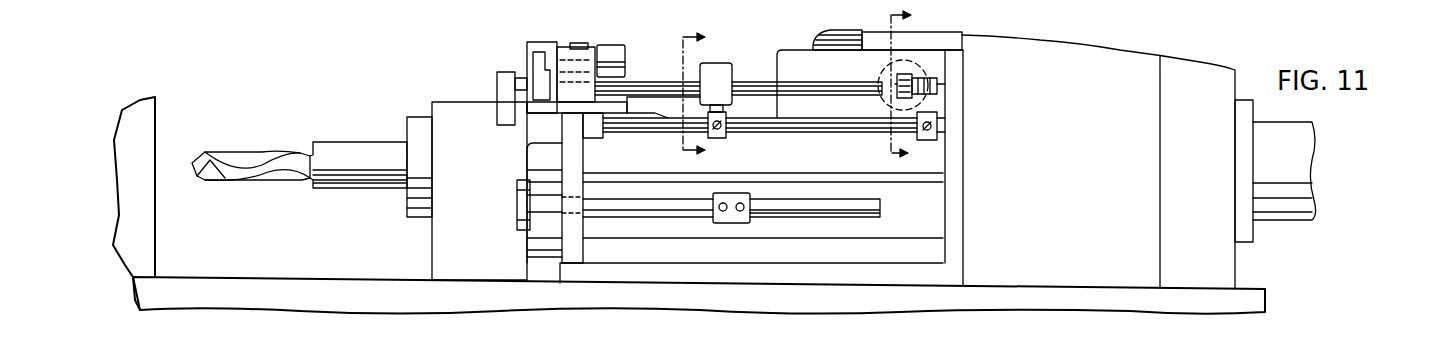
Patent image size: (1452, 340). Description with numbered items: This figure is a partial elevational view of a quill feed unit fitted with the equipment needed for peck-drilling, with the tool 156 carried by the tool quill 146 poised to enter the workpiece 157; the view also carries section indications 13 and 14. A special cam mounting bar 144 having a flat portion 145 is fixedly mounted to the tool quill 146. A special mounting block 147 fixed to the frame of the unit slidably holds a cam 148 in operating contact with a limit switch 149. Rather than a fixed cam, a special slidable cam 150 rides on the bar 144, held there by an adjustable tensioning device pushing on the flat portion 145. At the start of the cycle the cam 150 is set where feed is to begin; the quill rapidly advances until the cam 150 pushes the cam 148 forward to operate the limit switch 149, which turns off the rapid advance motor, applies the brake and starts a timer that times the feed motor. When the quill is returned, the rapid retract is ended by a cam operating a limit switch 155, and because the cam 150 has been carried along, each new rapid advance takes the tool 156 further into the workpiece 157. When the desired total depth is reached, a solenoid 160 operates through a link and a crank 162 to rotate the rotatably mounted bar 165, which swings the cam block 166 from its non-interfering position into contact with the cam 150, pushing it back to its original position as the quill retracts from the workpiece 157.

The section line 13- 13 is at (885, 82).
The section line 14- 14 is at (677, 92).
The cam mounting bar 144 is at (747, 83).
The flat portion 145 is at (787, 88).
The tool quill 146 is at (497, 78).
The mounting block 147 is at (575, 47).
The cam 148 is at (625, 66).
The limit switch 149 is at (578, 43).
The slidable cam 150 is at (715, 63).
The limit switch 155 is at (535, 42).
The tool 156 is at (292, 152).
The workpiece 157 is at (157, 123).
The solenoid 160 is at (945, 70).
The crank 162 is at (937, 138).
The rotatably mounted bar 165 is at (847, 137).
The cam block 166 is at (718, 138).